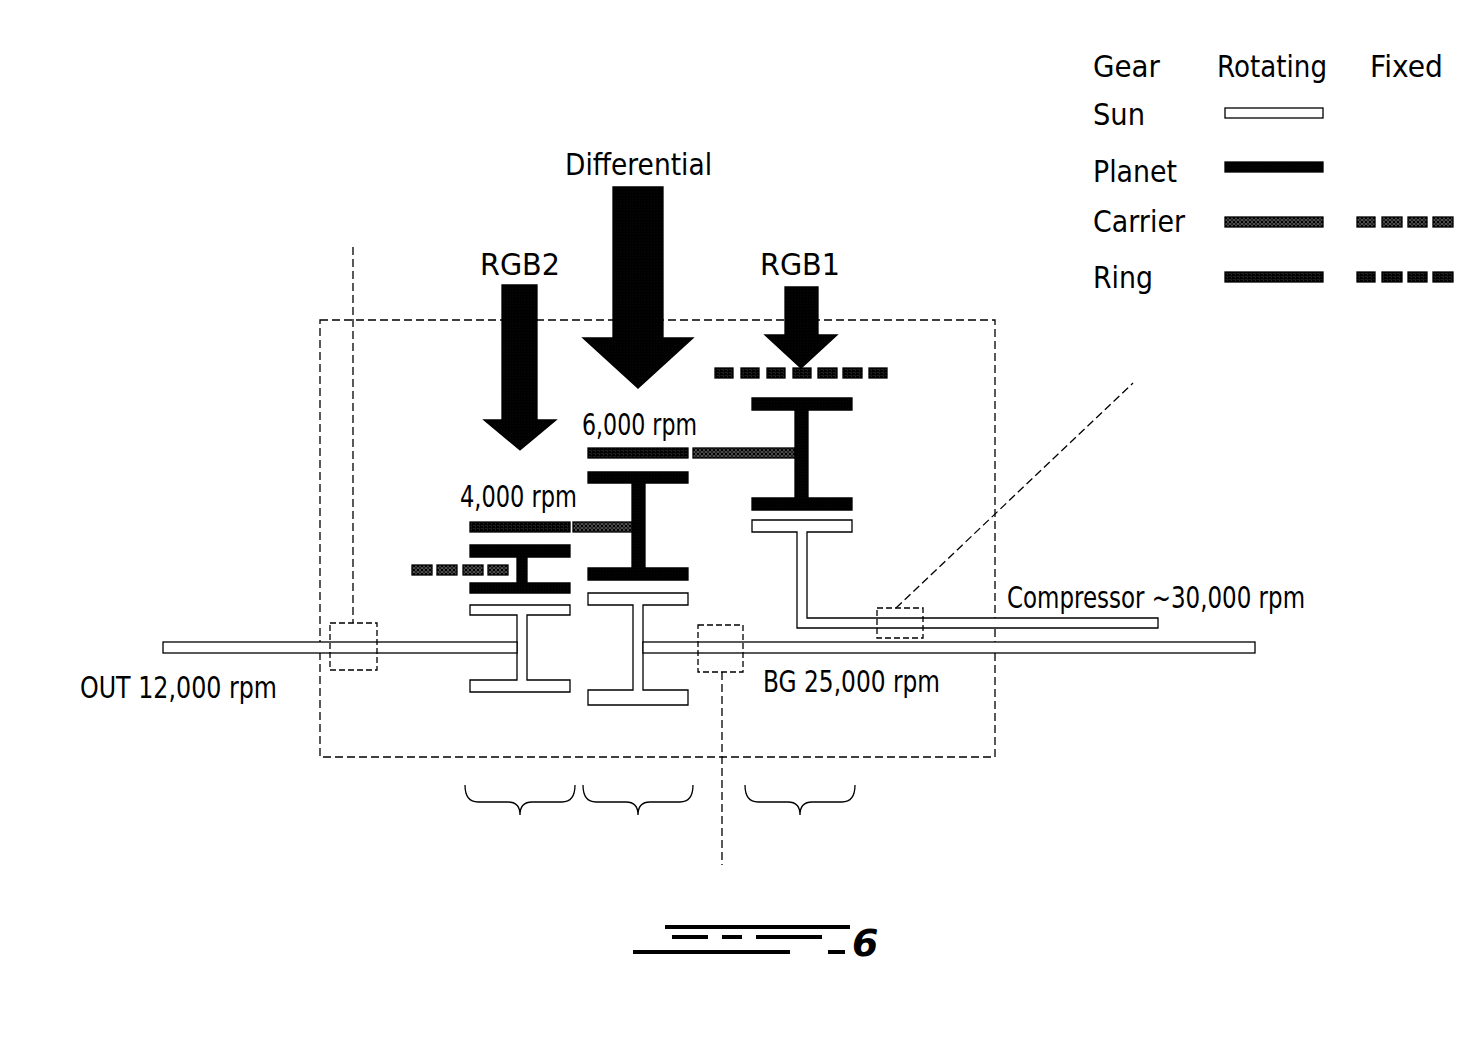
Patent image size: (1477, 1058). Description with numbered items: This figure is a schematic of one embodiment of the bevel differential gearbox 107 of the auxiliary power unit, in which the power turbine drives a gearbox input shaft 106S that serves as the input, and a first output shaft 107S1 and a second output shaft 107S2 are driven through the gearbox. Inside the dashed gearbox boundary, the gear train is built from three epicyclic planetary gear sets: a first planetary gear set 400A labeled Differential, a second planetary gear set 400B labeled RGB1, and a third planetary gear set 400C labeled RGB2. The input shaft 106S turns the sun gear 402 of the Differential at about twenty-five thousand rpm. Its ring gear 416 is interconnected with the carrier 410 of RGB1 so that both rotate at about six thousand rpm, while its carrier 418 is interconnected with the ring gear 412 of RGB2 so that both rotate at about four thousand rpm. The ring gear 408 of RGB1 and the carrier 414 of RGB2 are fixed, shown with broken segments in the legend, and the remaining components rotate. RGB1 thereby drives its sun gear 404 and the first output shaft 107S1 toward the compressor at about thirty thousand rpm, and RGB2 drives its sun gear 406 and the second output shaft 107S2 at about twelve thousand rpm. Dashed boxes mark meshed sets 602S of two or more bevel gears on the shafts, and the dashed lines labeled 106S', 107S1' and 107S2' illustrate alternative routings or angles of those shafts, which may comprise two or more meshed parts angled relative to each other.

The bevel differential gearbox 107 is at (320, 318).
The first output shaft 107S1 is at (970, 648).
The alternative arrangement of the first output shaft 107S1' is at (1080, 495).
The second output shaft 107S2 is at (340, 731).
The alternative arrangement of the second output shaft 107S2' is at (400, 394).
The gearbox input shaft 106S is at (949, 714).
The alternative arrangement of the gearbox input shaft 106S' is at (787, 780).
The first planetary gear set 400A is at (672, 562).
The second planetary gear set 400B is at (826, 558).
The third planetary gear set 400C is at (468, 665).
The sun gear of the first planetary gear set 402 is at (645, 500).
The sun gear of the second planetary gear set 404 is at (808, 420).
The sun gear of the third planetary gear set 406 is at (470, 549).
The ring gear of the second planetary gear set 408 is at (880, 370).
The carrier of the second planetary gear set 410 is at (735, 452).
The ring gear of the third planetary gear set 412 is at (470, 527).
The carrier of the third planetary gear set 414 is at (447, 577).
The ring gear of the first planetary gear set 416 is at (590, 450).
The carrier of the first planetary gear set 418 is at (590, 532).
The meshed set of bevel gears 602S is at (327, 628).